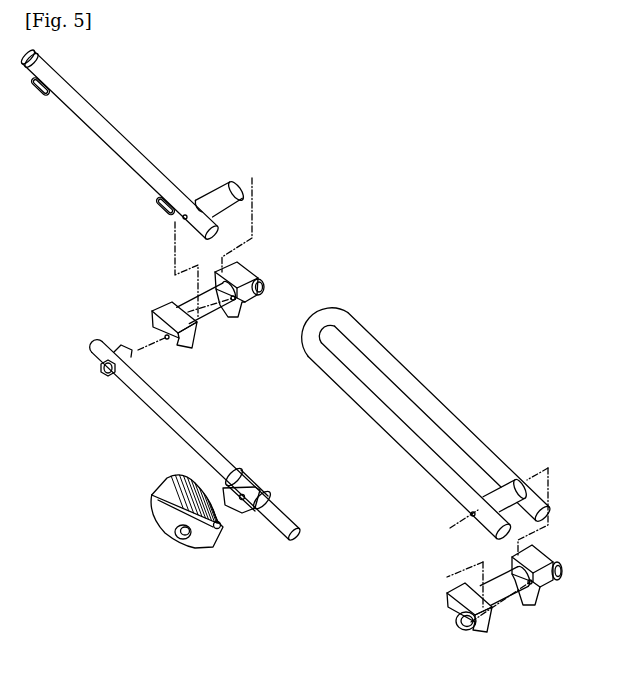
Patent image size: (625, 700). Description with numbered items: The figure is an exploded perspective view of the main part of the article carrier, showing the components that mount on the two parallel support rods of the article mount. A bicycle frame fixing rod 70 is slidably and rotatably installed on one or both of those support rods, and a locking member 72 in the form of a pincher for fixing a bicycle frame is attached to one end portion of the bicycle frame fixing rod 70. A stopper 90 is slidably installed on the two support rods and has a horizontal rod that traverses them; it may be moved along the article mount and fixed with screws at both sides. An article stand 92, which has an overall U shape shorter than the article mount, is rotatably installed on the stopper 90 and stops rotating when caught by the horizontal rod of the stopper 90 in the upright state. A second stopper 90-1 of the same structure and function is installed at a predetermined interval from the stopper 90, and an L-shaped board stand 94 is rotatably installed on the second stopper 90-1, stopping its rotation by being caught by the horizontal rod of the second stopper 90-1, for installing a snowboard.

The bicycle frame fixing rod 70 is at (177, 410).
The locking member 72 is at (160, 505).
The stopper 90 is at (500, 593).
The second stopper 90-1 is at (189, 304).
The article stand 92 is at (367, 342).
The board stand 94 is at (105, 125).